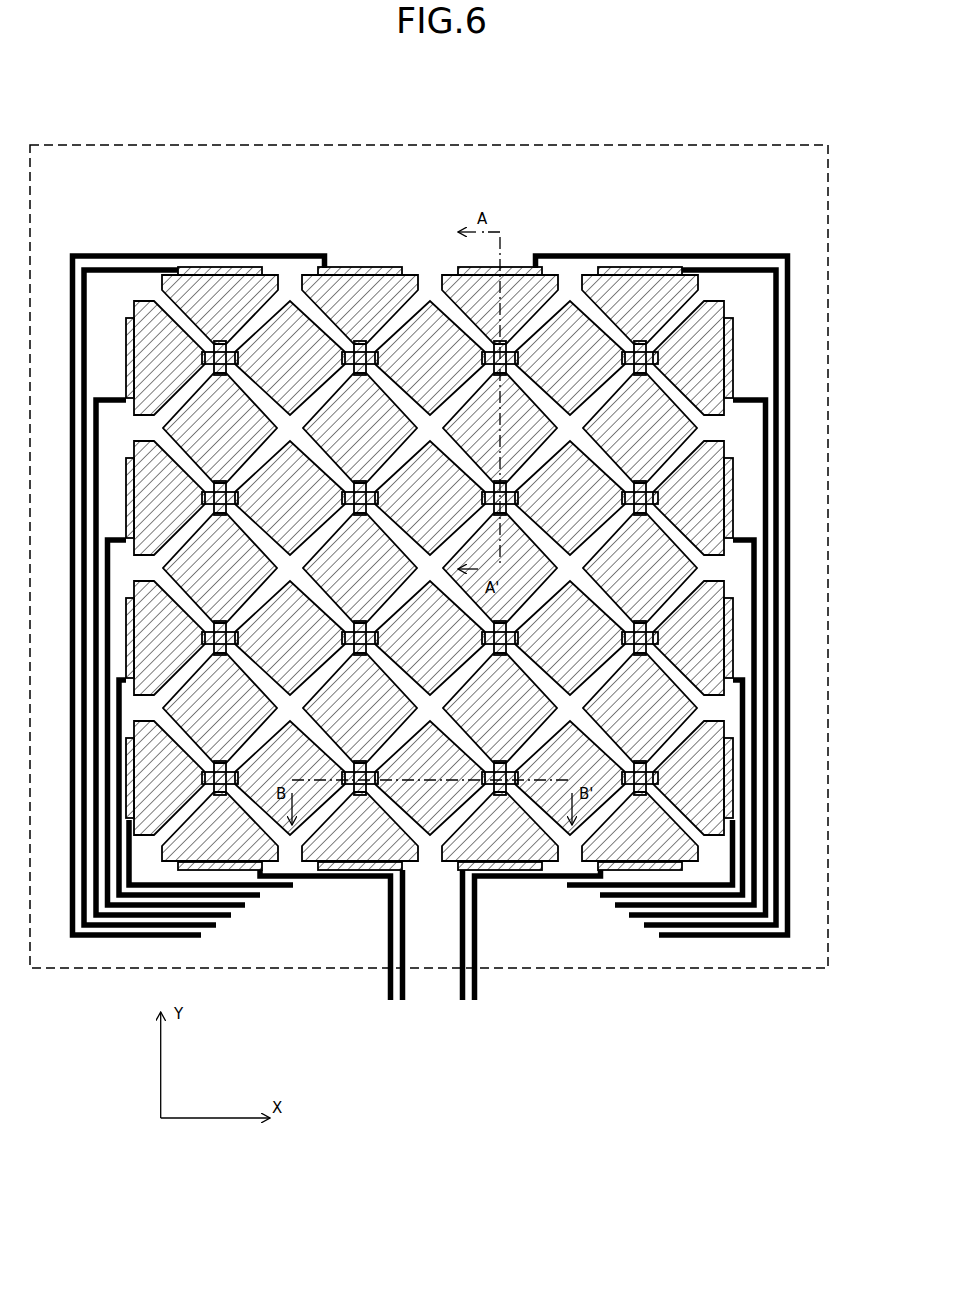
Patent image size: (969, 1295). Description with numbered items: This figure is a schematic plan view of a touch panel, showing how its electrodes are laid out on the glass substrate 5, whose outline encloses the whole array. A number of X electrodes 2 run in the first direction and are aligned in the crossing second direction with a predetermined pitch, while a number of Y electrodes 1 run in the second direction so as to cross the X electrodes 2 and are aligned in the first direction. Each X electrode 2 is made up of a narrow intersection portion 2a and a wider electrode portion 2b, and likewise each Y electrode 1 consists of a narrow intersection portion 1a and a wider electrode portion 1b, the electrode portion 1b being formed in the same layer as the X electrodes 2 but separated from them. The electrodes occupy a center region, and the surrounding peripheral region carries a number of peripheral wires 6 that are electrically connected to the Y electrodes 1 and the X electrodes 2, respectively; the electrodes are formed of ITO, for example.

The Y electrode 1 is at (397, 520).
The intersection portion 1a is at (212, 352).
The electrode portion 1b is at (203, 307).
The X electrode 2 is at (496, 504).
The intersection portion 2a is at (431, 277).
The electrode portion 2b is at (285, 333).
The glass substrate 5 is at (642, 146).
The peripheral wire 6 is at (790, 858).